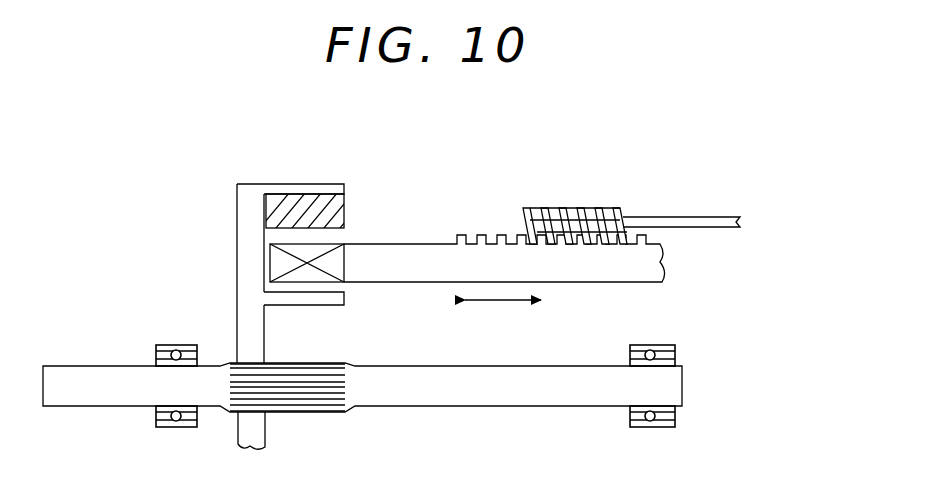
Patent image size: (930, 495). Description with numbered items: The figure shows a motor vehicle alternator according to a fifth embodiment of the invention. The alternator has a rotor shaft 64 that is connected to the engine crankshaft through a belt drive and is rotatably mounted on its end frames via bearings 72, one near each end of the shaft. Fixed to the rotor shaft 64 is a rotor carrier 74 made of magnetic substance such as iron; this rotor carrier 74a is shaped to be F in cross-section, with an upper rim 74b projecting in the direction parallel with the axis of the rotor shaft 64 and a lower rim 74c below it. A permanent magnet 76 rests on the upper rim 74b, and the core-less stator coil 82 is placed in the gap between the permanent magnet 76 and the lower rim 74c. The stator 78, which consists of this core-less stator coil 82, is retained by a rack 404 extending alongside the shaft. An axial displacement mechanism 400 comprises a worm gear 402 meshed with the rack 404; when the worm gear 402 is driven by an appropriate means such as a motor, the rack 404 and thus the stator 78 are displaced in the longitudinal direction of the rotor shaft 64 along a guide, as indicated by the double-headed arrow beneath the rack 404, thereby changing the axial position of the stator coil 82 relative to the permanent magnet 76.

The rotor shaft 64 is at (493, 406).
The bearings 72 is at (187, 427).
The rotor carrier 74 is at (280, 280).
The rotor carrier 74a is at (247, 245).
The upper rim 74b is at (287, 188).
The lower rim 74c is at (313, 298).
The permanent magnet 76 is at (327, 211).
The stator 78 is at (580, 215).
The stator coil 82 is at (337, 262).
The axial displacement mechanism 400 is at (669, 211).
The worm gear 402 is at (598, 212).
The rack 404 is at (632, 260).